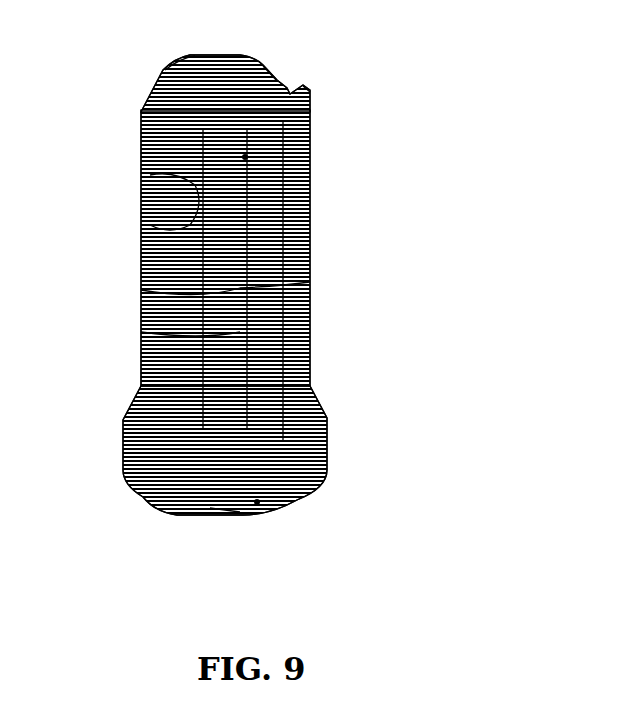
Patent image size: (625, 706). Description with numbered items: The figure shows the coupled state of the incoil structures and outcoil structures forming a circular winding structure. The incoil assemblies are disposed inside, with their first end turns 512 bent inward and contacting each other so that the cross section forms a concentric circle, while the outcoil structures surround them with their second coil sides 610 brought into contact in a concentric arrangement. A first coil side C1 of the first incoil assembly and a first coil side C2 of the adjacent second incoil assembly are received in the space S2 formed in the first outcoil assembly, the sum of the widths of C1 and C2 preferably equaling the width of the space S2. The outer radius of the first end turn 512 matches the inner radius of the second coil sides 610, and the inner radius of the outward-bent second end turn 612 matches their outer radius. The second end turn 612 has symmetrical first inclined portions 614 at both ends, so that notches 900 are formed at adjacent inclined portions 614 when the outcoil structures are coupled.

The first end turn 512 is at (141, 110).
The second coil sides 610 is at (310, 290).
The second end turn 612 is at (202, 512).
The first inclined portions 614 is at (280, 80).
The notches 900 is at (245, 157).
The space S2 is at (173, 216).
The first coil side of the first incoil assembly C1 is at (141, 290).
The first coil side of the second incoil assembly C2 is at (141, 332).